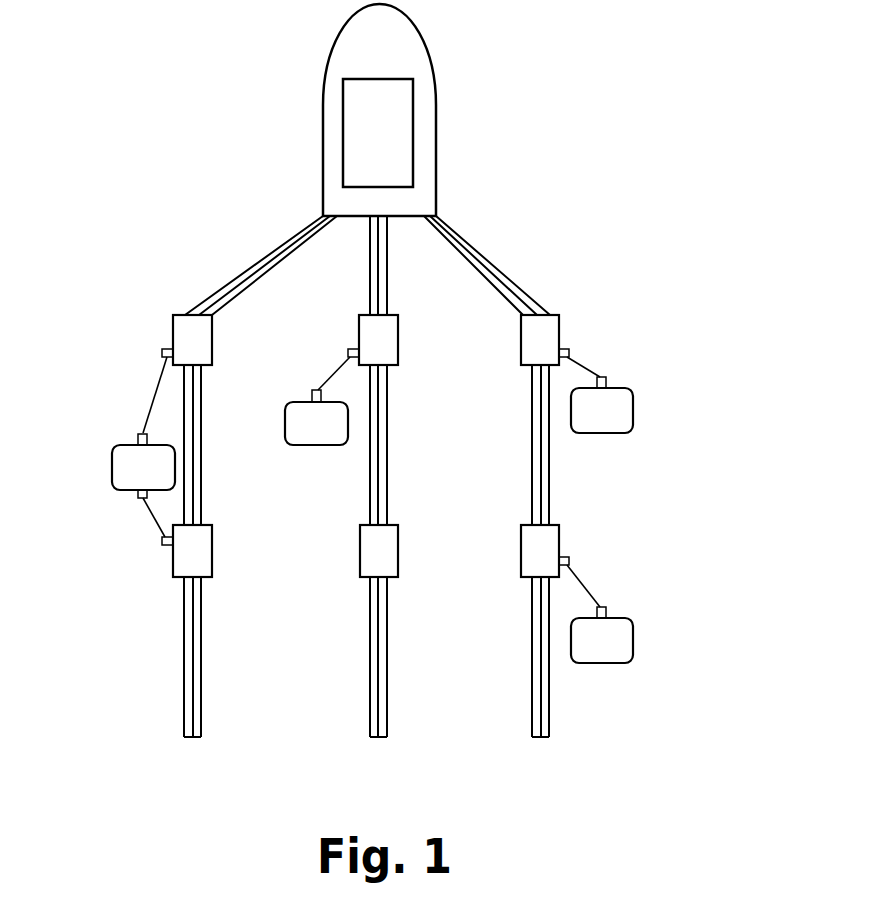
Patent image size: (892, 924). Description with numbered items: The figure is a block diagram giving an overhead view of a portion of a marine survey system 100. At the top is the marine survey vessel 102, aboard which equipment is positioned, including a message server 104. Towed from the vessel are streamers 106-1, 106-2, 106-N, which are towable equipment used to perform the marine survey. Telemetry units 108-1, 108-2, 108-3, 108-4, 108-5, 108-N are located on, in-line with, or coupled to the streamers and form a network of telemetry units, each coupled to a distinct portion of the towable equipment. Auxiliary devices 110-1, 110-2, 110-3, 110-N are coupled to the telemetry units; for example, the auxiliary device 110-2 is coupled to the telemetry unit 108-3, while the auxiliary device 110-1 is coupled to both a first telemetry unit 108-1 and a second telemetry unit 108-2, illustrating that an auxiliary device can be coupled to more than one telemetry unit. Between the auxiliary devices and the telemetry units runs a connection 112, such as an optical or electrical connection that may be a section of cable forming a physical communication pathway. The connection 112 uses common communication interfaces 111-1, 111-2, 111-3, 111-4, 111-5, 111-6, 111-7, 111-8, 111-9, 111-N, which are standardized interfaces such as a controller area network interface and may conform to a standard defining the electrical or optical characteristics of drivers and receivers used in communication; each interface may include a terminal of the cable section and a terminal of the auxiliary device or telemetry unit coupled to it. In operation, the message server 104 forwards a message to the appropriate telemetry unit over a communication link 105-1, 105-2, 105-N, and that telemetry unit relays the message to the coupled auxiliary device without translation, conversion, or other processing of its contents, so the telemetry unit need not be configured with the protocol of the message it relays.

The marine survey system 100 is at (148, 62).
The marine survey vessel 102 is at (418, 32).
The message server 104 is at (413, 137).
The communication link 105-1 is at (184, 735).
The communication link 105-2 is at (370, 735).
The communication link 105-N is at (532, 735).
The streamer 106-1 is at (184, 711).
The streamer 106-2 is at (370, 711).
The streamer 106-N is at (532, 711).
The telemetry unit 108-1 is at (173, 327).
The telemetry unit 108-2 is at (173, 555).
The telemetry unit 108-3 is at (359, 318).
The telemetry unit 108-4 is at (360, 548).
The telemetry unit 108-5 is at (560, 333).
The telemetry unit 108-N is at (560, 550).
The auxiliary device 110-1 is at (112, 470).
The auxiliary device 110-2 is at (312, 445).
The auxiliary device 110-3 is at (633, 413).
The auxiliary device 110-N is at (633, 642).
The common communication interface 111-1 is at (162, 356).
The common communication interface 111-2 is at (138, 440).
The common communication interface 111-3 is at (138, 494).
The common communication interface 111-4 is at (162, 541).
The common communication interface 111-5 is at (348, 352).
The common communication interface 111-6 is at (313, 396).
The common communication interface 111-7 is at (569, 352).
The common communication interface 111-8 is at (606, 380).
The common communication interface 111-9 is at (569, 560).
The common communication interface 111-N is at (606, 610).
The connection 112 is at (155, 397).